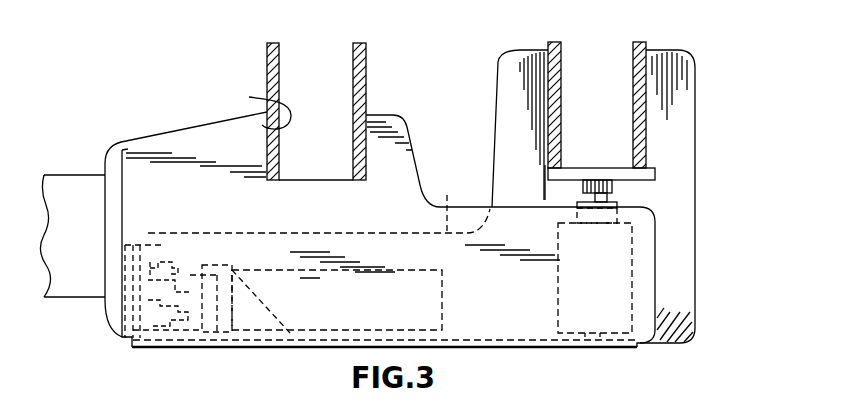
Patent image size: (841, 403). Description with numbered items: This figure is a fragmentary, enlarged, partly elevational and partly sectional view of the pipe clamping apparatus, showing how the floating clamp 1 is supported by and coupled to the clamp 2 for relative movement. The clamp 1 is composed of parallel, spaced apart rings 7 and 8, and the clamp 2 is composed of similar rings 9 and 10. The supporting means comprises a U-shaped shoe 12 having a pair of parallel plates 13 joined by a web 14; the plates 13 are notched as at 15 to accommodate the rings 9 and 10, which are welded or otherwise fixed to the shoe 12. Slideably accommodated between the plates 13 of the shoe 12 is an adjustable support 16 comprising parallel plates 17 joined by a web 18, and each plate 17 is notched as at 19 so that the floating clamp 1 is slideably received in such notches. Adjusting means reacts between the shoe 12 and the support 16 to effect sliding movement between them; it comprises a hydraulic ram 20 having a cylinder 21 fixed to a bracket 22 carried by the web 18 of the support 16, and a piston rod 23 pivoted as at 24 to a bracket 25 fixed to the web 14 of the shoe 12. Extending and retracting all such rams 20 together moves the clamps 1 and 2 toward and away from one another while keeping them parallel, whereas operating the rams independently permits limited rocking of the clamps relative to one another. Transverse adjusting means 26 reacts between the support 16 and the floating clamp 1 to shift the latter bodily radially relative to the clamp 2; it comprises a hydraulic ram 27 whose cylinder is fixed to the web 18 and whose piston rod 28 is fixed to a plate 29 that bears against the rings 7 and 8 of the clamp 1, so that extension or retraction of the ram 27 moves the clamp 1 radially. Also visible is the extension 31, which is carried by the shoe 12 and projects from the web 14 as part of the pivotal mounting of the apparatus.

The floating clamp 1 is at (657, 41).
The clamp member 2 is at (375, 48).
The ring 7 is at (639, 87).
The ring 8 is at (554, 82).
The ring 9 is at (360, 71).
The ring 10 is at (267, 53).
The U-shaped shoe 12 is at (186, 93).
The plate 13 is at (165, 146).
The web 14 is at (113, 310).
The notch 15 is at (258, 106).
The adjustable support 16 is at (706, 154).
The plate 17 is at (500, 186).
The web 18 is at (481, 337).
The notch 19 is at (560, 166).
The hydraulic ram 20 is at (240, 257).
The cylinder 21 is at (372, 270).
The bracket 22 is at (263, 305).
The piston rod 23 is at (198, 308).
The pivot 24 is at (171, 266).
The bracket 25 is at (180, 284).
The transverse adjusting means 26 is at (648, 281).
The hydraulic ram 27 is at (633, 252).
The piston rod 28 is at (612, 190).
The plate 29 is at (598, 180).
The extension 31 is at (67, 192).